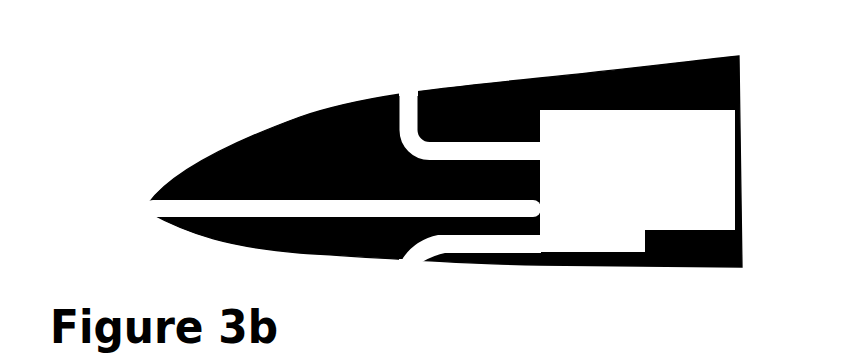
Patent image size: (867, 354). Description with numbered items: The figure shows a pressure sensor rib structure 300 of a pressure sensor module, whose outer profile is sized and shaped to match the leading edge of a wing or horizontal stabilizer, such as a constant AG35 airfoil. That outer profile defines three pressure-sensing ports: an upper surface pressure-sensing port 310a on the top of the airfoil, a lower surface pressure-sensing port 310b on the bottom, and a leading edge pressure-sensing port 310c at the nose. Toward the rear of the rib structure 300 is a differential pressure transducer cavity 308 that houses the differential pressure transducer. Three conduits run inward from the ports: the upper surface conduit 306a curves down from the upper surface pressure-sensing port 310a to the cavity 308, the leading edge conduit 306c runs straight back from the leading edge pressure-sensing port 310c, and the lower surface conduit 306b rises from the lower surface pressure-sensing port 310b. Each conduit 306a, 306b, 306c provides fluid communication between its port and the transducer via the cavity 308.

The pressure sensor rib structure 300 is at (236, 62).
The upper surface conduit 306a is at (475, 125).
The lower surface conduit 306b is at (470, 251).
The leading edge conduit 306c is at (343, 210).
The differential pressure transducer cavity 308 is at (734, 144).
The upper surface pressure-sensing port 310a is at (397, 91).
The lower surface pressure-sensing port 310b is at (405, 268).
The leading edge pressure-sensing port 310c is at (142, 208).